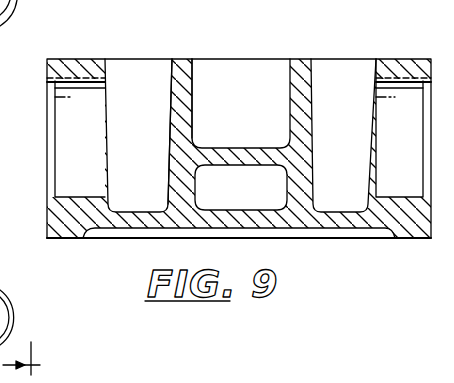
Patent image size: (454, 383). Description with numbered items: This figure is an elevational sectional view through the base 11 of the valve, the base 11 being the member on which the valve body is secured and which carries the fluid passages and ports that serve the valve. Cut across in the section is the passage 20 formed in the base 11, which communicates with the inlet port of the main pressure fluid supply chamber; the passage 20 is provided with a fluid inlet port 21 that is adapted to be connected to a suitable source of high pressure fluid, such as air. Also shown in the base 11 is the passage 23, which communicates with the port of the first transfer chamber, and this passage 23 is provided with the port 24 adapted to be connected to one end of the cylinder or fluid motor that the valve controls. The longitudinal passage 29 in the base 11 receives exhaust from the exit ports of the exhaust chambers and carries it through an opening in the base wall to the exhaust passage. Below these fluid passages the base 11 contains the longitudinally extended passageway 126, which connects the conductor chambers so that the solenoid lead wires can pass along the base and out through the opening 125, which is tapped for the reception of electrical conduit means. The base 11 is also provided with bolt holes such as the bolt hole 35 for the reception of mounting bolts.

The base 11 is at (113, 58).
The passage 20 is at (173, 70).
The longitudinal passage 29 is at (196, 72).
The fluid inlet port 21 is at (54, 81).
The opening 125 is at (86, 135).
The passage 23 is at (376, 75).
The port 24 is at (398, 82).
The longitudinally extended passageway 126 is at (257, 165).
The bolt hole 35 is at (13, 312).